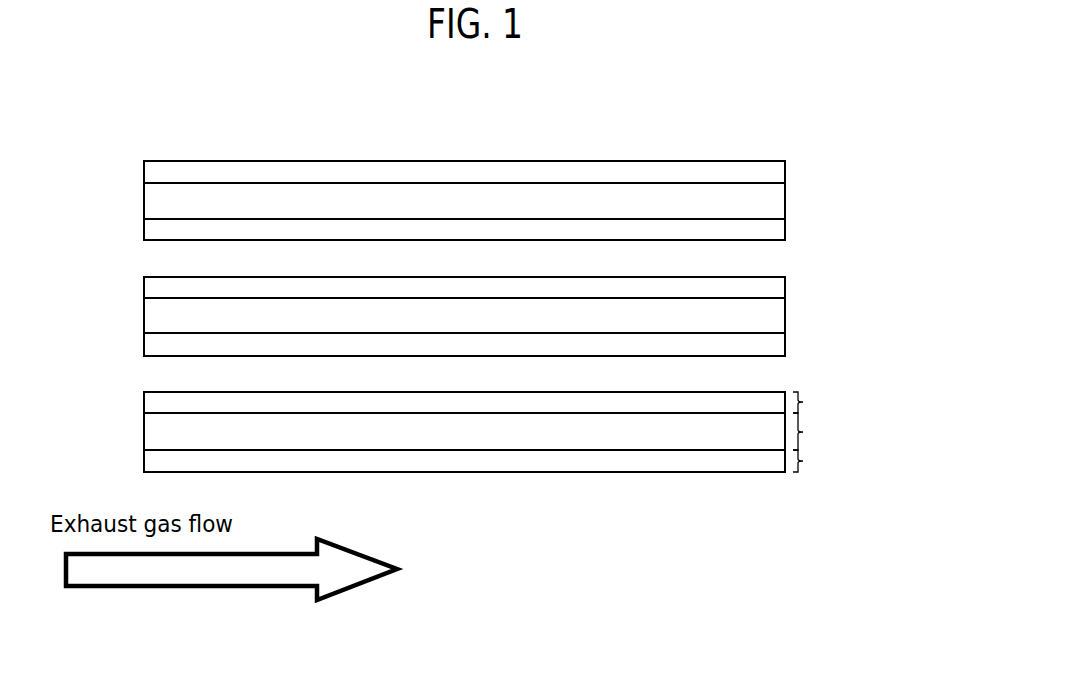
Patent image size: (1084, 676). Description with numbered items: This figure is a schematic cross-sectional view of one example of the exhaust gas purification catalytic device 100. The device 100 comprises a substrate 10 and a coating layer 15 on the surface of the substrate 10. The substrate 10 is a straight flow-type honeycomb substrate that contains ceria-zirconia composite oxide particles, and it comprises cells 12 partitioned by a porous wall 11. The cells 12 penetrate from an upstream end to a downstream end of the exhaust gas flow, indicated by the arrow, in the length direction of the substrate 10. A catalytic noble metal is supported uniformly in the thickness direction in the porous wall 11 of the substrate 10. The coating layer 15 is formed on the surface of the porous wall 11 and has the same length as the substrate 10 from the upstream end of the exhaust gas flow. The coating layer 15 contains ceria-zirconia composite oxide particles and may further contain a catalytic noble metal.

The exhaust gas purification catalytic device 100 is at (812, 122).
The substrate 10 is at (887, 153).
The porous wall 11 is at (770, 197).
The cells 12 is at (770, 255).
The coating layer 15 is at (647, 402).